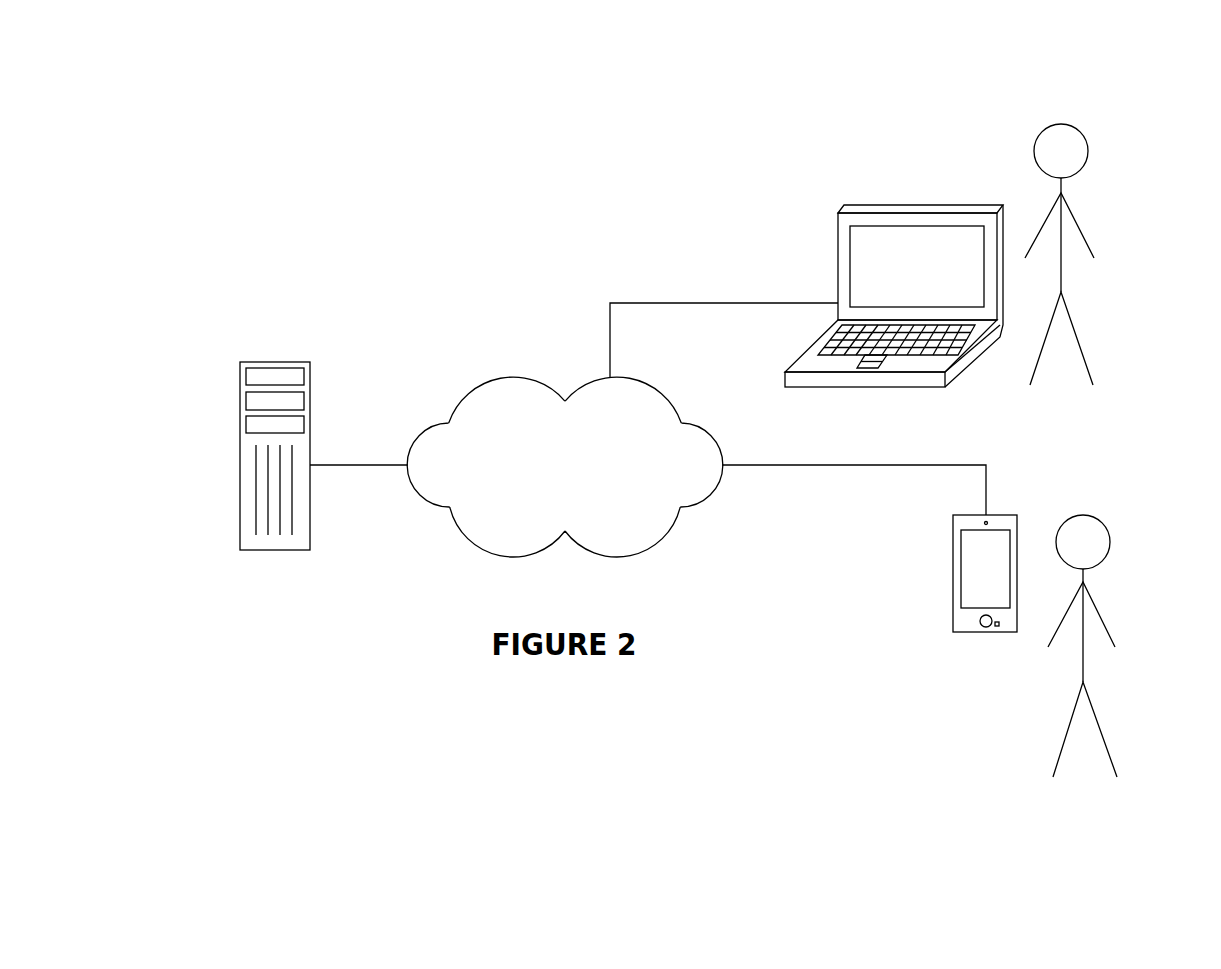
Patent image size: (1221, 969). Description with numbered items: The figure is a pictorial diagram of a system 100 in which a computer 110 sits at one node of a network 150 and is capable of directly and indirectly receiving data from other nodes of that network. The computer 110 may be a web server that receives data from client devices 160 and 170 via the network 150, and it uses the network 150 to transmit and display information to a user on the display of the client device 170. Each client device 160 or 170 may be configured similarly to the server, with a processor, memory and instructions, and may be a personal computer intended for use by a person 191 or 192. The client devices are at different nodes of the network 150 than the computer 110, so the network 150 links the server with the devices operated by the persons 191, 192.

The system 100 is at (278, 85).
The computer 110 is at (240, 371).
The network 150 is at (517, 377).
The client device 160 is at (953, 540).
The client device 170 is at (838, 243).
The person 191 is at (1083, 207).
The person 192 is at (1107, 583).